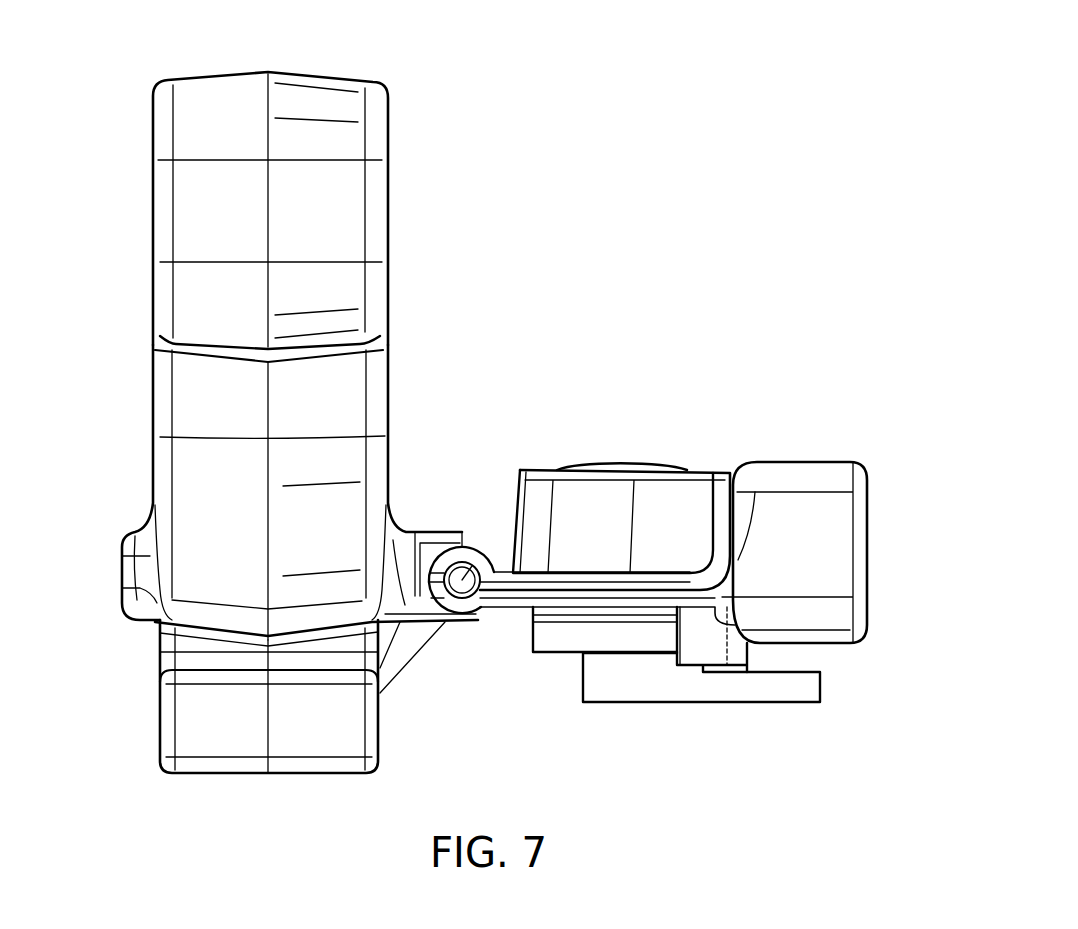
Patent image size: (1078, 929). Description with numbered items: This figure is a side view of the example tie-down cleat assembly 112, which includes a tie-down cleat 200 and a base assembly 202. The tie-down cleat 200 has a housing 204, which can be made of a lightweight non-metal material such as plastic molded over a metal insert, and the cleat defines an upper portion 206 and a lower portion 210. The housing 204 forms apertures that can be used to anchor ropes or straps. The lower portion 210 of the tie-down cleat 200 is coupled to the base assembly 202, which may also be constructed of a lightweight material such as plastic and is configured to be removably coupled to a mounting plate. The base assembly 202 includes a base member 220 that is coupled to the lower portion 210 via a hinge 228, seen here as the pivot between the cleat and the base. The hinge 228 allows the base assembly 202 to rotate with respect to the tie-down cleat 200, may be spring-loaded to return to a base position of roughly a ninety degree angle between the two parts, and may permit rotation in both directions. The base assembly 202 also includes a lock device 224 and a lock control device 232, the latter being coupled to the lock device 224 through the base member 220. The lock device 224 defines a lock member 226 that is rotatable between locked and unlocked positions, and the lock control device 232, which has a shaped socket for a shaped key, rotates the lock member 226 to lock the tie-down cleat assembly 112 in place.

The tie-down cleat assembly 112 is at (668, 92).
The tie-down cleat 200 is at (300, 361).
The housing 204 is at (268, 361).
The upper portion 206 is at (166, 63).
The lower portion 210 is at (198, 791).
The base assembly 202 is at (732, 358).
The base member 220 is at (545, 478).
The lock device 224 is at (580, 663).
The lock member 226 is at (633, 682).
The hinge 228 is at (462, 580).
The lock control device 232 is at (625, 466).